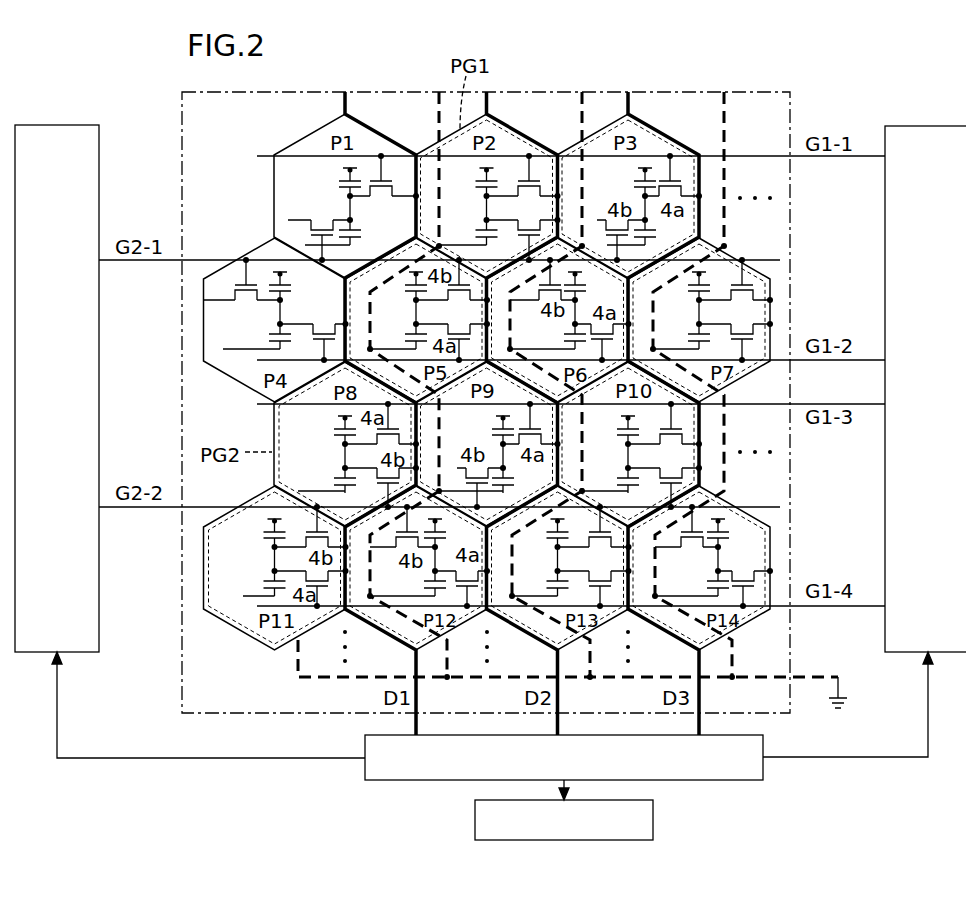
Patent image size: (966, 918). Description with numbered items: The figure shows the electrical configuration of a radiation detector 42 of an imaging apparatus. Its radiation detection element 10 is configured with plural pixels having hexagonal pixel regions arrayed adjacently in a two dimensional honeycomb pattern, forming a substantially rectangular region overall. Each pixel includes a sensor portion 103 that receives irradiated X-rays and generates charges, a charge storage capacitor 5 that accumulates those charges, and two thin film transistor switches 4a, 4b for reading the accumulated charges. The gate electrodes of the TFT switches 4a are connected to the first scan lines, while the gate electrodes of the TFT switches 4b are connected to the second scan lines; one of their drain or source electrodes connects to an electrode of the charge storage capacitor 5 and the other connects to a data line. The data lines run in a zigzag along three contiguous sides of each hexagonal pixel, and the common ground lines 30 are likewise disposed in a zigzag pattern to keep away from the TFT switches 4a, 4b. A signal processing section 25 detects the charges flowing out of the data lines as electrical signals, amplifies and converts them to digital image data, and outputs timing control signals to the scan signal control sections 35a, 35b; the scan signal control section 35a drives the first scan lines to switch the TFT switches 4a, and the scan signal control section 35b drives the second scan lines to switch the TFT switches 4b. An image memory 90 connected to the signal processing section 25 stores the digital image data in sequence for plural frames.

The radiation detection element 10 is at (735, 92).
The radiation detector 42 is at (565, 81).
The common ground lines 30 is at (439, 118).
The TFT switches 4a is at (524, 176).
The TFT switches 4b is at (524, 240).
The sensor portion 103 is at (474, 189).
The charge storage capacitor 5 is at (473, 233).
The scan signal control section 35b is at (56, 124).
The scan signal control section 35a is at (924, 125).
The signal processing section 25 is at (705, 781).
The image memory 90 is at (474, 822).